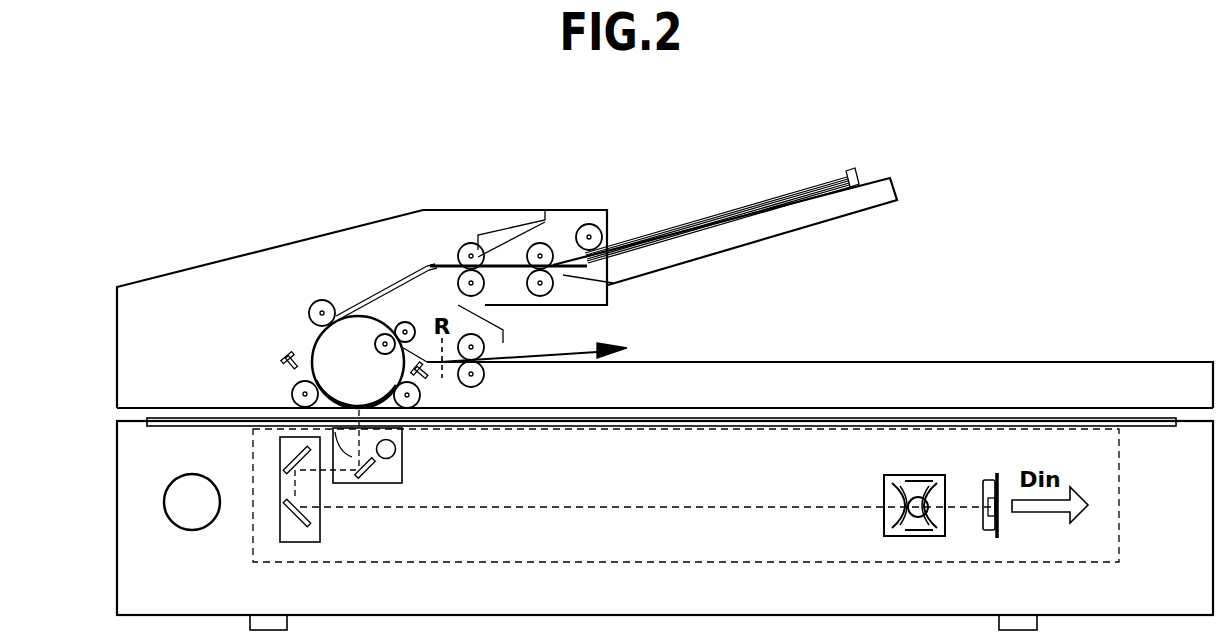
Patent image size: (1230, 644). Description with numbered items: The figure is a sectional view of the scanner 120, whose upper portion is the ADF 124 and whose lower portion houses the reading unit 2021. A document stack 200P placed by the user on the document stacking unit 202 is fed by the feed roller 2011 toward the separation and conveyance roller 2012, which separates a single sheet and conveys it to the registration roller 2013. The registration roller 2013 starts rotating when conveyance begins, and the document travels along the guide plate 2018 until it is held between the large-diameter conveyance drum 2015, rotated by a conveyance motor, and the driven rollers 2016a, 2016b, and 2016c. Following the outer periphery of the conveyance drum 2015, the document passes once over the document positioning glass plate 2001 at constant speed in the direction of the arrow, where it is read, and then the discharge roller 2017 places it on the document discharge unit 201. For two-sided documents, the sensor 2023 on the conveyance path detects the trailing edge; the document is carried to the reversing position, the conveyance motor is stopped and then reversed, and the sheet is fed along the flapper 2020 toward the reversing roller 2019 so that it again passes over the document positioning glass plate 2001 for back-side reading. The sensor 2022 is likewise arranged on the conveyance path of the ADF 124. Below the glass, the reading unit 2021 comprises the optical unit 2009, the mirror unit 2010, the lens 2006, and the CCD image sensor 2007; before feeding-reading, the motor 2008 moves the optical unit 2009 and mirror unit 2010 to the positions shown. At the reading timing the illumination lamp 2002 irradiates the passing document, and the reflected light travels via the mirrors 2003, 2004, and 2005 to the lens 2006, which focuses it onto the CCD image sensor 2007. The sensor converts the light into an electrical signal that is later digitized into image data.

The scanner 120 is at (115, 573).
The ADF (document conveyance unit) 124 is at (193, 262).
The document discharge unit 201 is at (750, 361).
The document stacking unit 202 is at (897, 190).
The document stack 200P is at (856, 174).
The document positioning glass plate 2001 is at (160, 426).
The illumination lamp 2002 is at (396, 450).
The mirror 2003 is at (387, 484).
The mirror 2004 is at (285, 455).
The mirror 2005 is at (287, 516).
The lens 2006 is at (905, 537).
The CCD image sensor 2007 is at (1000, 527).
The motor 2008 is at (163, 504).
The optical unit 2009 is at (360, 484).
The mirror unit 2010 is at (300, 543).
The feed roller 2011 is at (590, 224).
The separation and conveyance roller 2012 is at (540, 243).
The registration roller 2013 is at (471, 243).
The conveyance drum 2015 is at (325, 340).
The driven roller 2016a is at (318, 300).
The driven roller 2016b is at (292, 394).
The driven roller 2016c is at (417, 396).
The discharge roller 2017 is at (483, 340).
The guide plate 2018 is at (400, 278).
The reversing roller 2019 is at (377, 335).
The flapper 2020 is at (425, 350).
The reading unit 2021 is at (590, 563).
The sensor 2022 is at (283, 360).
The sensor 2023 is at (430, 372).